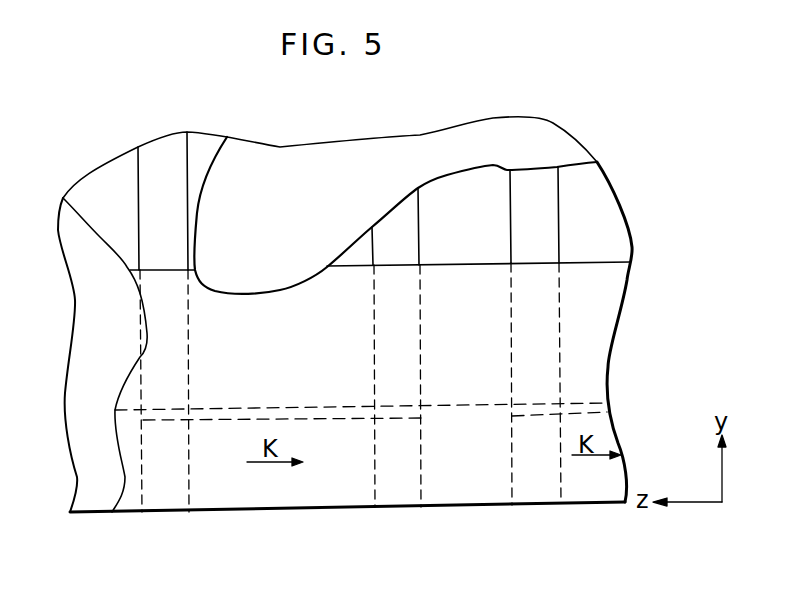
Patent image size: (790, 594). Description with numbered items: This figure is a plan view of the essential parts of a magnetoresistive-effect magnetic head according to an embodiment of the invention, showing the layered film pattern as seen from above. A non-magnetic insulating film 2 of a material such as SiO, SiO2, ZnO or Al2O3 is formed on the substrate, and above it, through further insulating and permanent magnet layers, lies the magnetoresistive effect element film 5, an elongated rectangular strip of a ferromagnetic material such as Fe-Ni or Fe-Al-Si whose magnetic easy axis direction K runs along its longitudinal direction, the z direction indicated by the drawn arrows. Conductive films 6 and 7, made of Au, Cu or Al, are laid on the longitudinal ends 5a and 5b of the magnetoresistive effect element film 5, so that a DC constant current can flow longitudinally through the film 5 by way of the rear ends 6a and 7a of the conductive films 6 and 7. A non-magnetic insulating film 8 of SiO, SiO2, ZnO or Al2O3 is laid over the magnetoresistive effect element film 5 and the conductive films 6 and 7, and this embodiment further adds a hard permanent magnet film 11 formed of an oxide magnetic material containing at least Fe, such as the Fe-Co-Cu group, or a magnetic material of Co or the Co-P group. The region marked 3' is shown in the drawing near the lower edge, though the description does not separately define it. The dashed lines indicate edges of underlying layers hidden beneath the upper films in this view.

The non-magnetic insulating film 2 is at (463, 185).
The fillet region 3' is at (466, 519).
The magnetoresistive effect element film 5 is at (293, 495).
The longitudinal end 5a is at (167, 495).
The longitudinal end 5b is at (408, 497).
The conductive film 6 is at (153, 203).
The rear end of conductive film 6a is at (163, 147).
The conductive film 7 is at (387, 302).
The rear end of conductive film 7a is at (397, 213).
The non-magnetic insulating film 8 is at (313, 160).
The hard permanent magnet film 11 is at (490, 273).